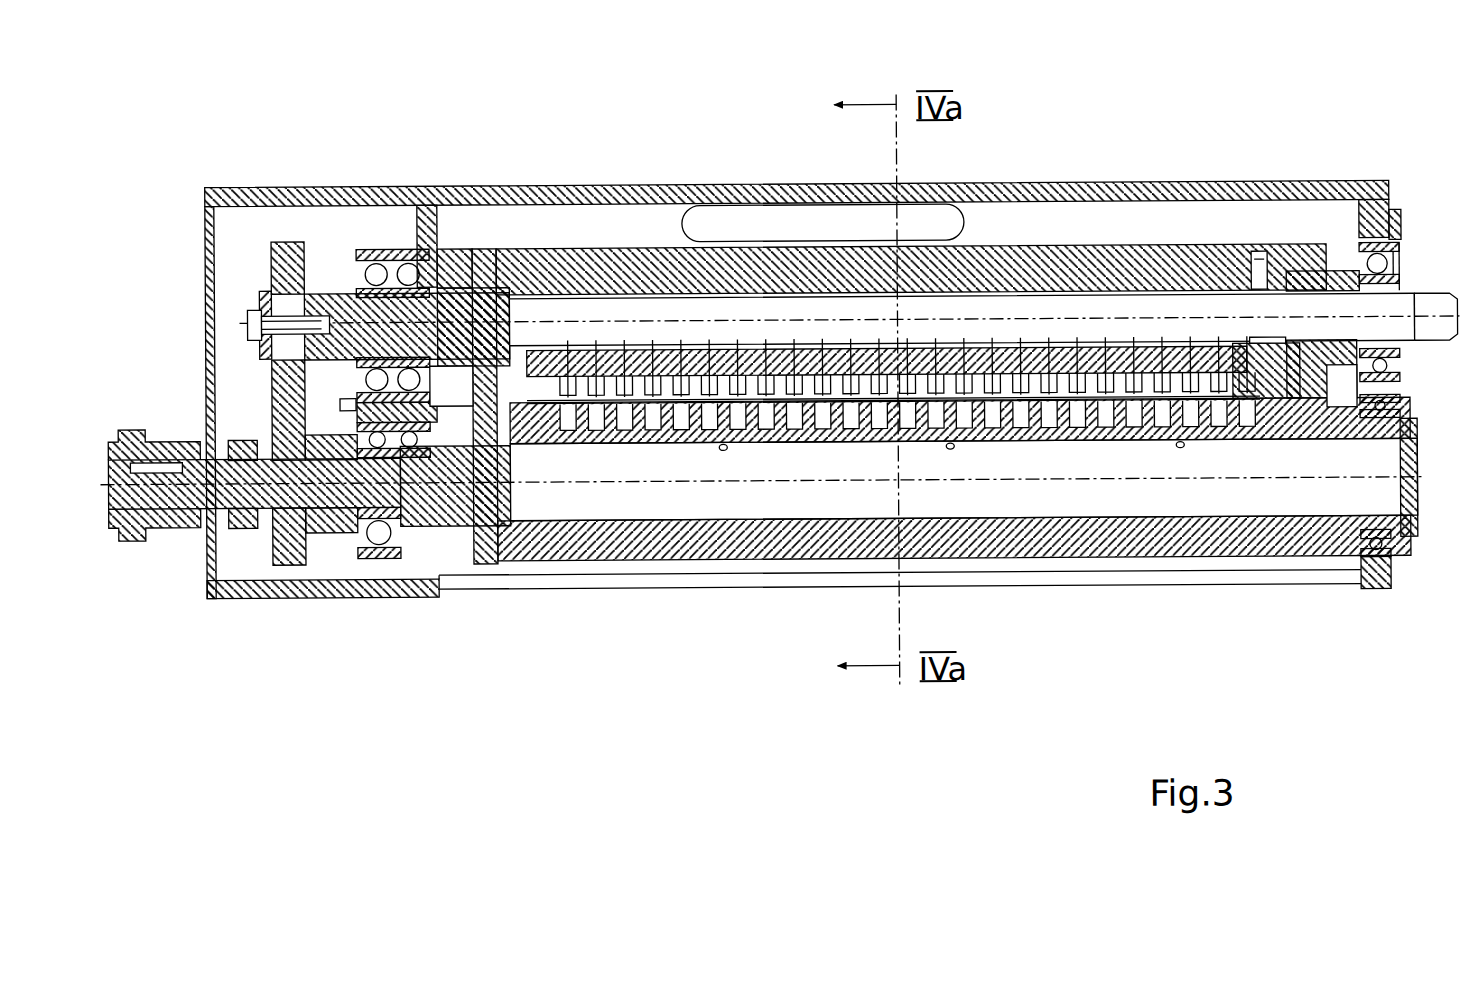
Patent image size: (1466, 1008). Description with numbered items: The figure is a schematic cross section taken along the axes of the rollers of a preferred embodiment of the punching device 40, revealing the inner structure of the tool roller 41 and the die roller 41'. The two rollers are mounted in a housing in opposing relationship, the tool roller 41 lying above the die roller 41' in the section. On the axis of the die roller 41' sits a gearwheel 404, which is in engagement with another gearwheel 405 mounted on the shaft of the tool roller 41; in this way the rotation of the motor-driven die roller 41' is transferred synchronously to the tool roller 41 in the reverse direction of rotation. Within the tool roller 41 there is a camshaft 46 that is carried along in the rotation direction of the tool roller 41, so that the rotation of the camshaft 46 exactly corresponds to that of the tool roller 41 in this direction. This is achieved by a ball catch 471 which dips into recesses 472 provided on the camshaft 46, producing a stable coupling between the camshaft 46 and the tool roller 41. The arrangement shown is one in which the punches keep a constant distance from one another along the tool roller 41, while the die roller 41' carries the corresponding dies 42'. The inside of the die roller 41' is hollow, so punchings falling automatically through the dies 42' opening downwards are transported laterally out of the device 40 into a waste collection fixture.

The device 40 is at (405, 126).
The tool roller 41 is at (936, 331).
The die roller 41' is at (954, 513).
The dies 42' is at (894, 511).
The camshaft 46 is at (1405, 300).
The gearwheel 404 is at (288, 562).
The gearwheel 405 is at (296, 238).
The ball catch 471 is at (1258, 250).
The recesses 472 is at (1262, 365).